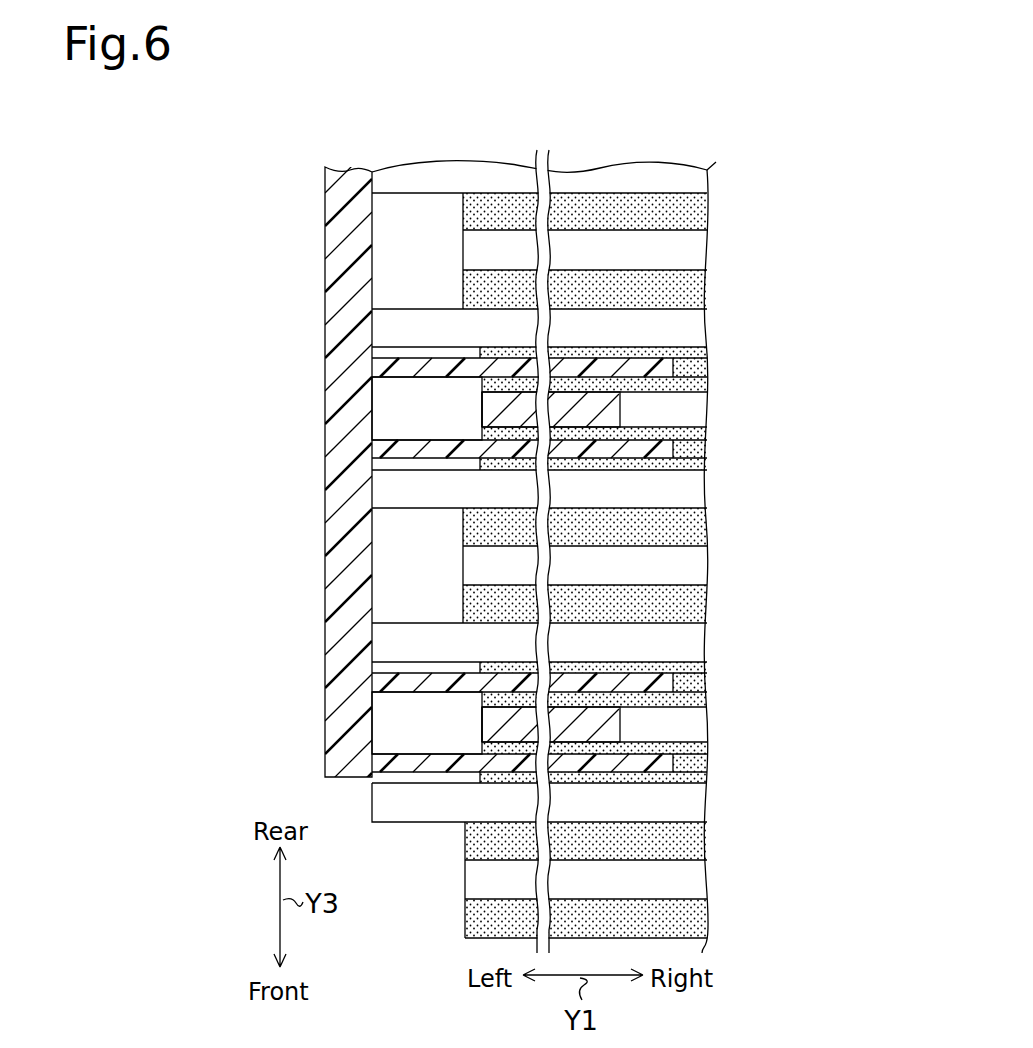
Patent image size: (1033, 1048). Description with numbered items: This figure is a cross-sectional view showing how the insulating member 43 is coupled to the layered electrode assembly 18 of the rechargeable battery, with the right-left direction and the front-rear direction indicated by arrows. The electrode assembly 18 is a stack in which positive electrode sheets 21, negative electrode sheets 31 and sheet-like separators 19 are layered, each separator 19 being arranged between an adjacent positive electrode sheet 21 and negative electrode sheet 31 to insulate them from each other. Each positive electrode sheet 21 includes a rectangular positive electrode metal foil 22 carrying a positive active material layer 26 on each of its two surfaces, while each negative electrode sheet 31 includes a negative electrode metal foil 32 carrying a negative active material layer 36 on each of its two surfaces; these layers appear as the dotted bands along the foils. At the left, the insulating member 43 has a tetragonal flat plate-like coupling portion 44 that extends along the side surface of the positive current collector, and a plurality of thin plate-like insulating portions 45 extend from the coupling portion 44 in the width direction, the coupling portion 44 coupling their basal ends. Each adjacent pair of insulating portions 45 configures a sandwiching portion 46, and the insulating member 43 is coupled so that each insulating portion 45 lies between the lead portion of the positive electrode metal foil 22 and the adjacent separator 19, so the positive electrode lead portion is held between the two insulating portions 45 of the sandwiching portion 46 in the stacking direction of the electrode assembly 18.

The electrode assembly 18 is at (688, 139).
The separator 19 is at (397, 323).
The positive electrode sheet 21 is at (482, 407).
The positive electrode metal foil 22 is at (692, 408).
The positive active material layer 26 is at (700, 368).
The negative electrode sheet 31 is at (463, 255).
The negative electrode metal foil 32 is at (693, 250).
The negative active material layer 36 is at (693, 213).
The insulating member 43 is at (352, 172).
The coupling portion 44 is at (336, 203).
The insulating portion 45 is at (398, 457).
The sandwiching portion 46 is at (731, 351).